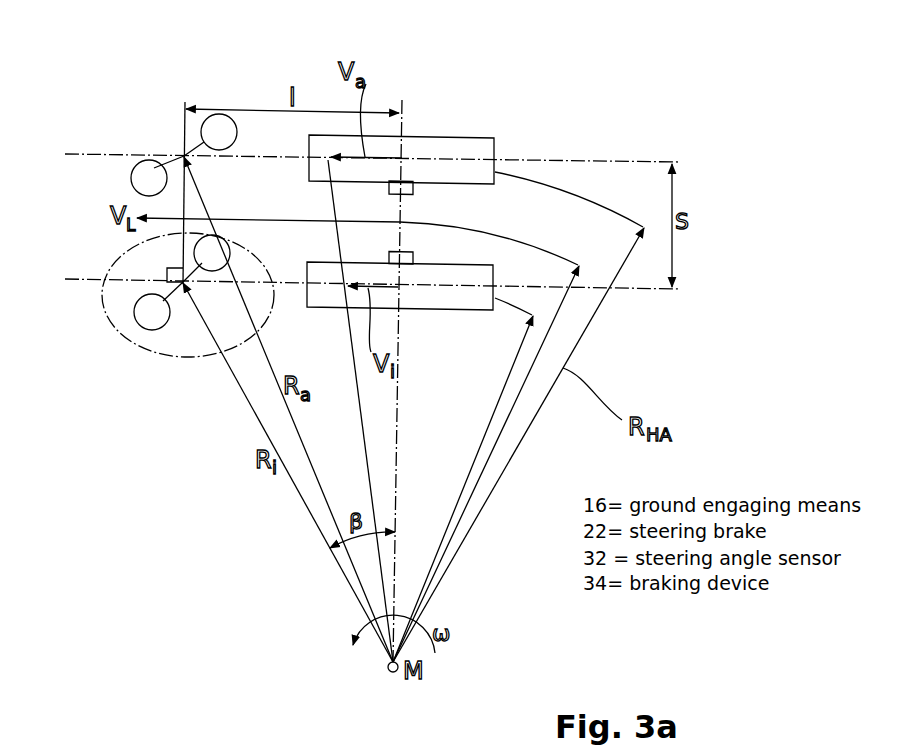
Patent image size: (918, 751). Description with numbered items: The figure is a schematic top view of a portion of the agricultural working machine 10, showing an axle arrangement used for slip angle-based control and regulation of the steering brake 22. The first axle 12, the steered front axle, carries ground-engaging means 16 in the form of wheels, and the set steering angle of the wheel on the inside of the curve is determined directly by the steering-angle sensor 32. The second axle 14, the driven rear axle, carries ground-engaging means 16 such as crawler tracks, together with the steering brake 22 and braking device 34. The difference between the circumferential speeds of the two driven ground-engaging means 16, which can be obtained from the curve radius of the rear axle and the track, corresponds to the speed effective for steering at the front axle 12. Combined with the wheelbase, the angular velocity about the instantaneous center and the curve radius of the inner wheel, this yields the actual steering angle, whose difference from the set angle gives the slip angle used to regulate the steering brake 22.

The agricultural working machine 10 is at (553, 116).
The first axle 12 is at (213, 187).
The second axle 14 is at (431, 213).
The ground-engaging means 16 is at (143, 150).
The steering brake 22 is at (407, 186).
The steering-angle sensor 32 is at (166, 272).
The braking device 34 is at (407, 258).